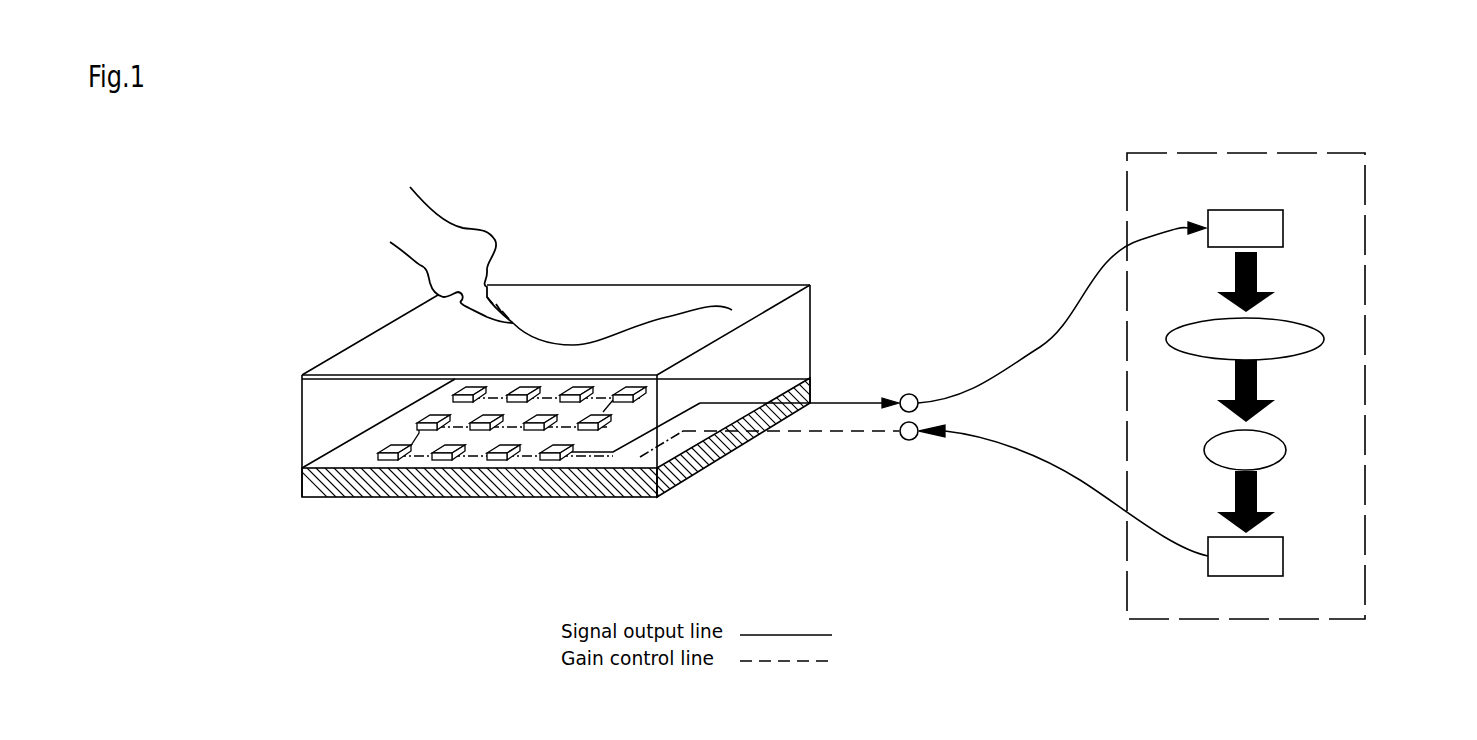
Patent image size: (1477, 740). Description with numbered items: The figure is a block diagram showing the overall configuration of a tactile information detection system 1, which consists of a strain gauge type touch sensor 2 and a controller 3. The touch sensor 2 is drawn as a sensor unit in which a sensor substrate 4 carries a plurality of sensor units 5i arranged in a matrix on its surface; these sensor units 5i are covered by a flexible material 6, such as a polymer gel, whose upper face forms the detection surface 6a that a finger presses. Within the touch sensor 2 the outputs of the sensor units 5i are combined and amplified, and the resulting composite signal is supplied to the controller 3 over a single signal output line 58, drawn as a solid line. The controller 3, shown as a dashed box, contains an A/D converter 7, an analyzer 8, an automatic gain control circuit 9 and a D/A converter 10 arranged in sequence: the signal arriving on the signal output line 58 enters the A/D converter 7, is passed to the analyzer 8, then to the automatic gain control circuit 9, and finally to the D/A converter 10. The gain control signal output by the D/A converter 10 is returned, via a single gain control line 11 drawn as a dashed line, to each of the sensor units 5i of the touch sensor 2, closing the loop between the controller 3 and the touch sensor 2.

The tactile information detection system 1 is at (933, 130).
The touch sensor 2 is at (632, 258).
The controller 3 is at (1418, 145).
The sensor substrate 4 is at (345, 480).
The sensor unit 5i is at (388, 448).
The flexible material 6 is at (318, 398).
The detection surface 6a is at (382, 348).
The A/D converter 7 is at (1283, 226).
The analyzer 8 is at (1318, 332).
The automatic gain control circuit 9 is at (1286, 446).
The D/A converter 10 is at (1283, 556).
The gain control line 11 is at (1017, 447).
The signal output line 58 is at (1040, 348).